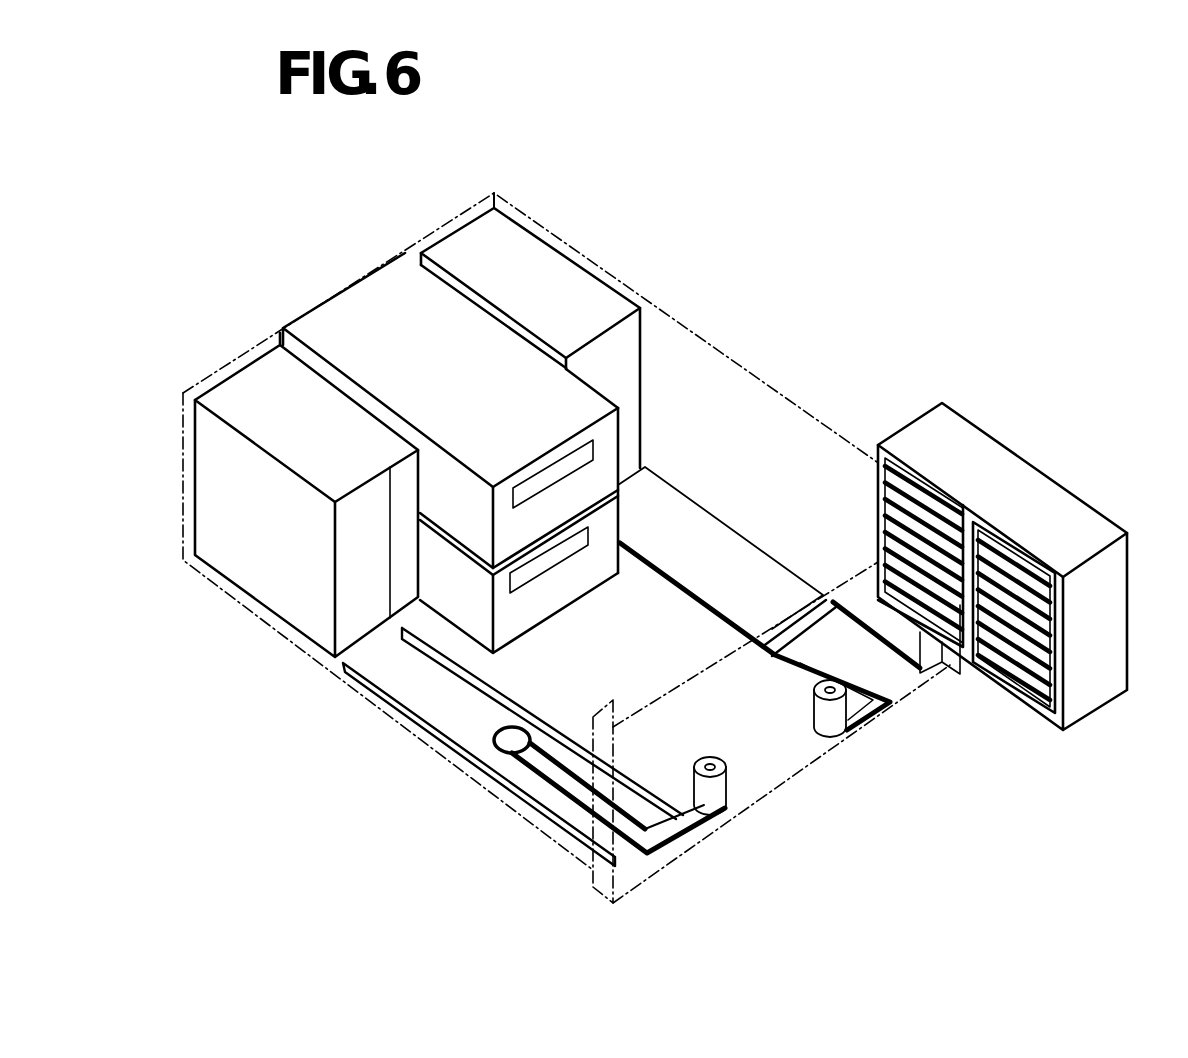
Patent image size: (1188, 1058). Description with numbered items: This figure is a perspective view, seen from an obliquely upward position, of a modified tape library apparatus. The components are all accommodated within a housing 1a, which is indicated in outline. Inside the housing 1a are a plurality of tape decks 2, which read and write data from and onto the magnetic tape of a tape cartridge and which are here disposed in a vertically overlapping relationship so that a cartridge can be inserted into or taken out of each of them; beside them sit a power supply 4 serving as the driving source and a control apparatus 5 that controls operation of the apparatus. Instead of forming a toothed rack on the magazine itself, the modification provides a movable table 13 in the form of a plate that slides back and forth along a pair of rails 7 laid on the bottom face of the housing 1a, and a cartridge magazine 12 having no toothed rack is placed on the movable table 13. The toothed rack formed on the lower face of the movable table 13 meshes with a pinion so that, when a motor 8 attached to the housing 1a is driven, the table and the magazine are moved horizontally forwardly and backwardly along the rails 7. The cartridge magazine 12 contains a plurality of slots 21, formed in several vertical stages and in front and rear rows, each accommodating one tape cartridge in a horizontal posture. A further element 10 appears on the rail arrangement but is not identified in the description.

The housing 1a is at (597, 258).
The tape deck 2 is at (463, 563).
The power supply 4 is at (485, 260).
The control apparatus 5 is at (272, 415).
The rails 7 is at (457, 673).
The motor 8 is at (717, 787).
The valve 10 is at (503, 740).
The cartridge magazine 12 is at (1013, 480).
The movable table 13 is at (728, 553).
The slots 21 is at (932, 520).